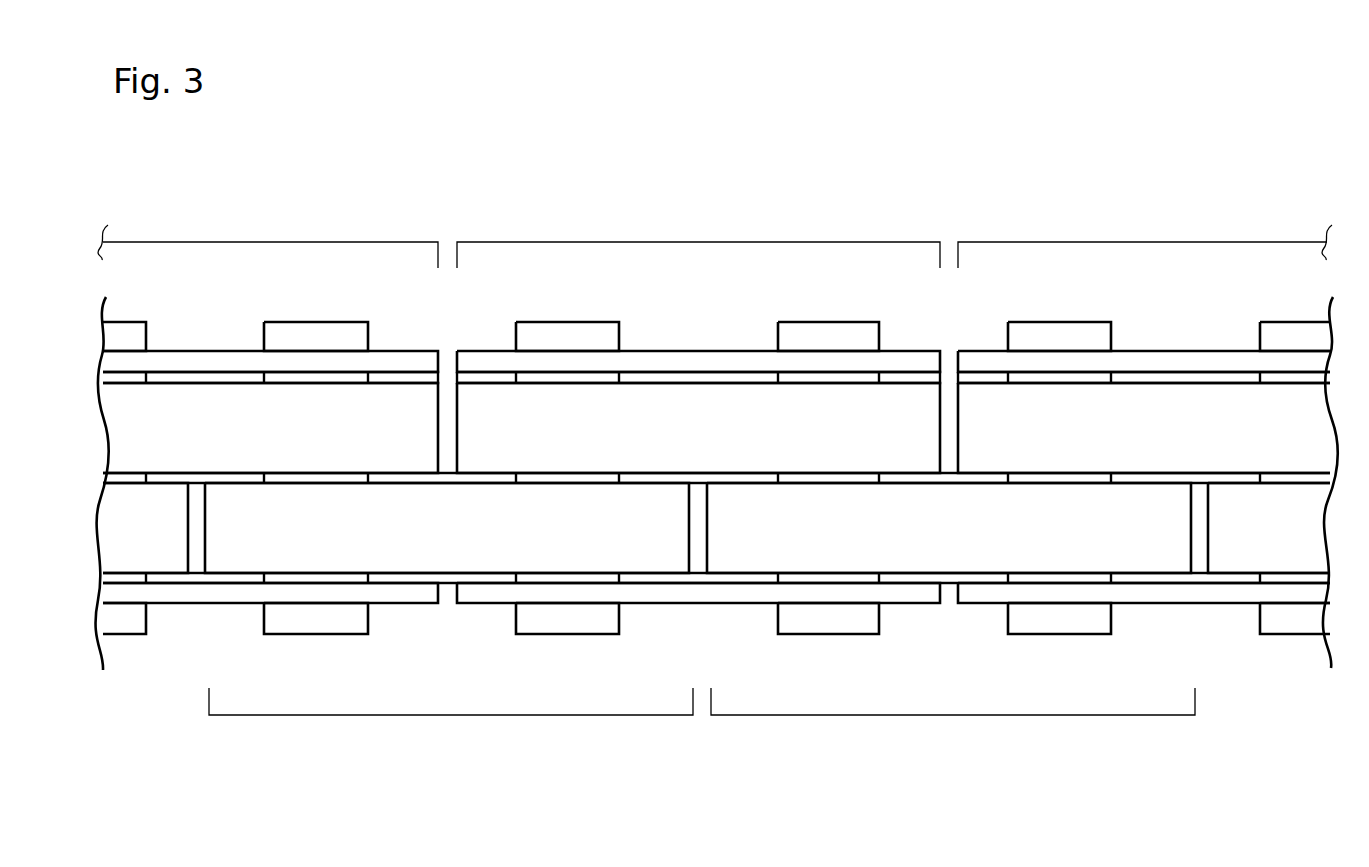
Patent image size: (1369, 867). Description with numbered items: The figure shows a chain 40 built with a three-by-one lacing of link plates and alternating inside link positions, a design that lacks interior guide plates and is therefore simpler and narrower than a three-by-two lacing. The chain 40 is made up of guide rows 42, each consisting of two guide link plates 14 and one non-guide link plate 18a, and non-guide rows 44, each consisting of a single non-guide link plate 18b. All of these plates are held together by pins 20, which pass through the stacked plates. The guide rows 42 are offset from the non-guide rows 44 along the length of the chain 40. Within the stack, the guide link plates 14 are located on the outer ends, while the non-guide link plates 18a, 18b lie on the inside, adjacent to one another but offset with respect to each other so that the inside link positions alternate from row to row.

The guide link plate 14 is at (193, 363).
The pin 20 is at (320, 337).
The non-guide link plate 18a is at (716, 428).
The non-guide link plate 18b is at (716, 528).
The chain 40 is at (1202, 161).
The guide row 42 is at (232, 240).
The non-guide row 44 is at (452, 720).